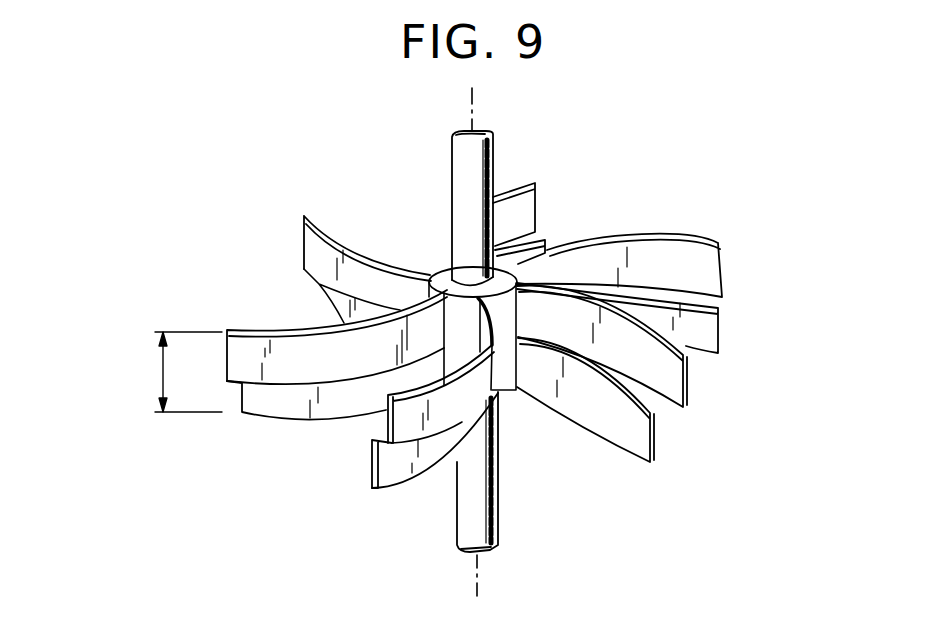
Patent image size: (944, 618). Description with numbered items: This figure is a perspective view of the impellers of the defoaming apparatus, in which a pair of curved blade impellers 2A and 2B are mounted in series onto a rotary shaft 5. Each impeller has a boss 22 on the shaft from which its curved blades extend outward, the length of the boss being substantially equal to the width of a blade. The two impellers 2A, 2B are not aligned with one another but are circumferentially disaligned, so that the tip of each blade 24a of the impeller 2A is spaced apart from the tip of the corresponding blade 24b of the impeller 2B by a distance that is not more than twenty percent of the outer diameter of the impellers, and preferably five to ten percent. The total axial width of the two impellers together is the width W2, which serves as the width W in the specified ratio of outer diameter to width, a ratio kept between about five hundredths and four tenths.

The rotary shaft 5 is at (483, 160).
The boss 22 is at (440, 276).
The curved blade impeller 2A is at (665, 305).
The curved blade impeller 2B is at (644, 222).
The blade 24a is at (707, 333).
The blade 24b is at (693, 260).
The total width of the impellers W2 is at (169, 372).